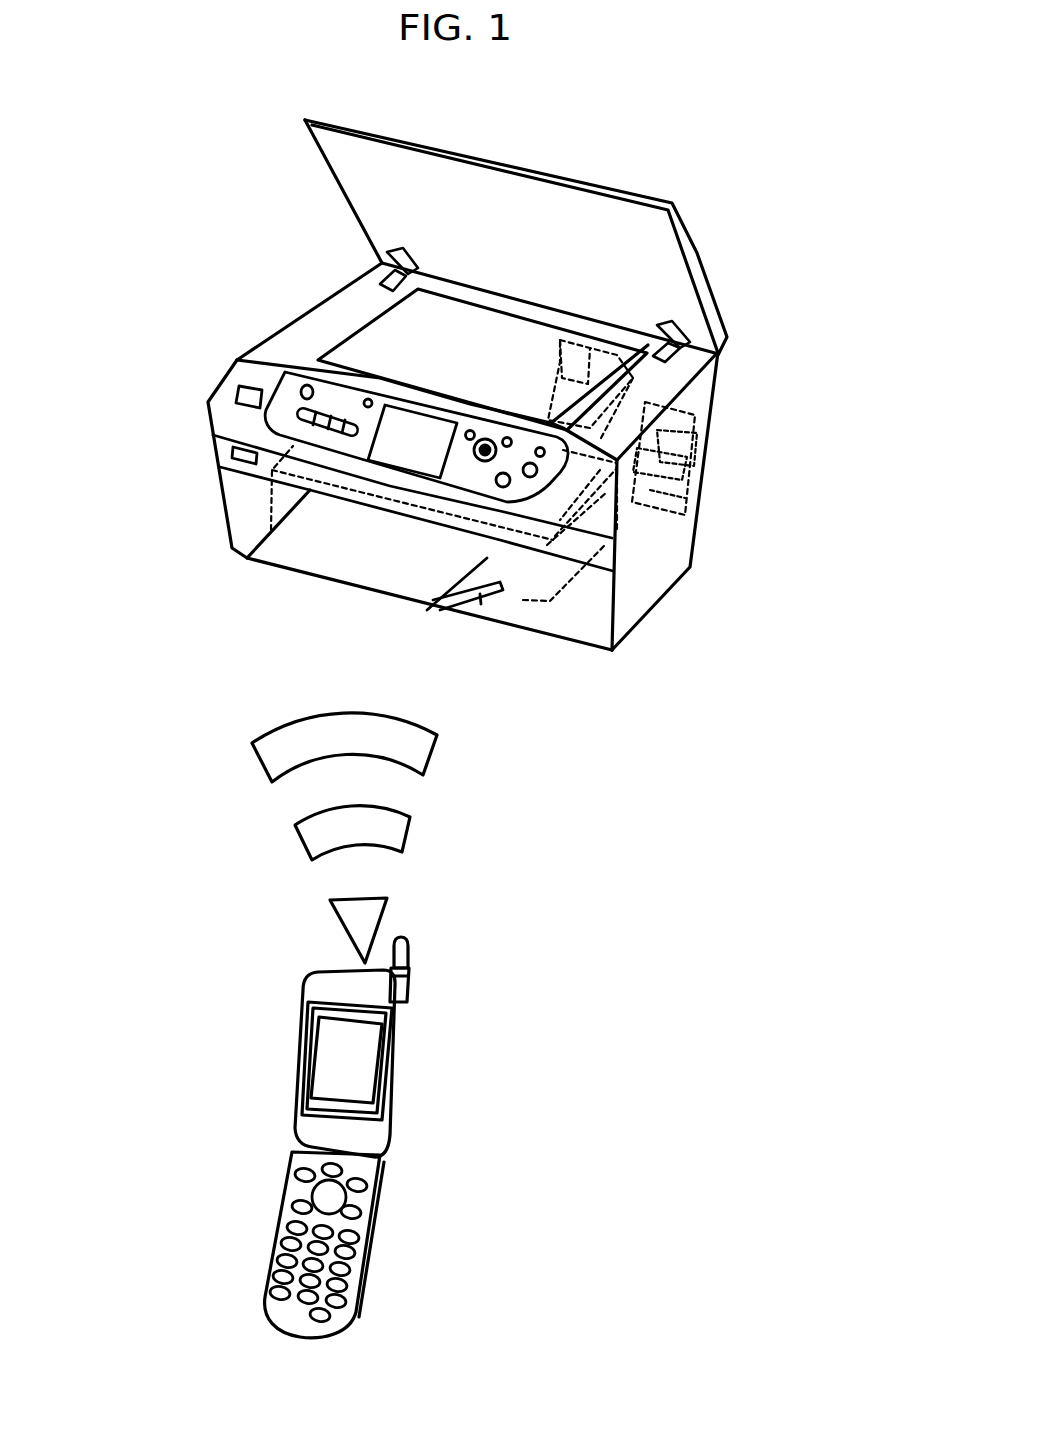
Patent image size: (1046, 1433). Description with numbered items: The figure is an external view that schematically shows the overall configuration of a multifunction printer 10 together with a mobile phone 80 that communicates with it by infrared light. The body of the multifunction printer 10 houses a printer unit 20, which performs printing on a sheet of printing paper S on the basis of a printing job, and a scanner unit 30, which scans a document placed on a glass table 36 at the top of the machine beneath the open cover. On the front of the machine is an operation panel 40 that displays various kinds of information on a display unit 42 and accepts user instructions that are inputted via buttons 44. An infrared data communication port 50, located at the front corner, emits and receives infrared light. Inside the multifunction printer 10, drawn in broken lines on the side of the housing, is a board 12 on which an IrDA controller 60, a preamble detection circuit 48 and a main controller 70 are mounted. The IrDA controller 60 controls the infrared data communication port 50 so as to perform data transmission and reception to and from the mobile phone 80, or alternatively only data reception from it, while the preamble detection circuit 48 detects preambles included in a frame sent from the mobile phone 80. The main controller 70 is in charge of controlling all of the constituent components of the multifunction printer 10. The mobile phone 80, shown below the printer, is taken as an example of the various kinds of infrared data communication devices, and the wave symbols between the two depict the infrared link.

The multifunction printer 10 is at (592, 145).
The board 12 is at (700, 398).
The printer unit 20 is at (625, 500).
The scanner unit 30 is at (615, 355).
The glass table 36 is at (391, 338).
The operation panel 40 is at (330, 395).
The display unit 42 is at (420, 453).
The buttons 44 is at (505, 486).
The preamble detection circuit 48 is at (700, 500).
The infrared data communication port 50 is at (238, 390).
The IrDA controller 60 is at (697, 420).
The main controller 70 is at (700, 455).
The sheet of printing paper S is at (316, 566).
The mobile phone 80 is at (445, 1043).